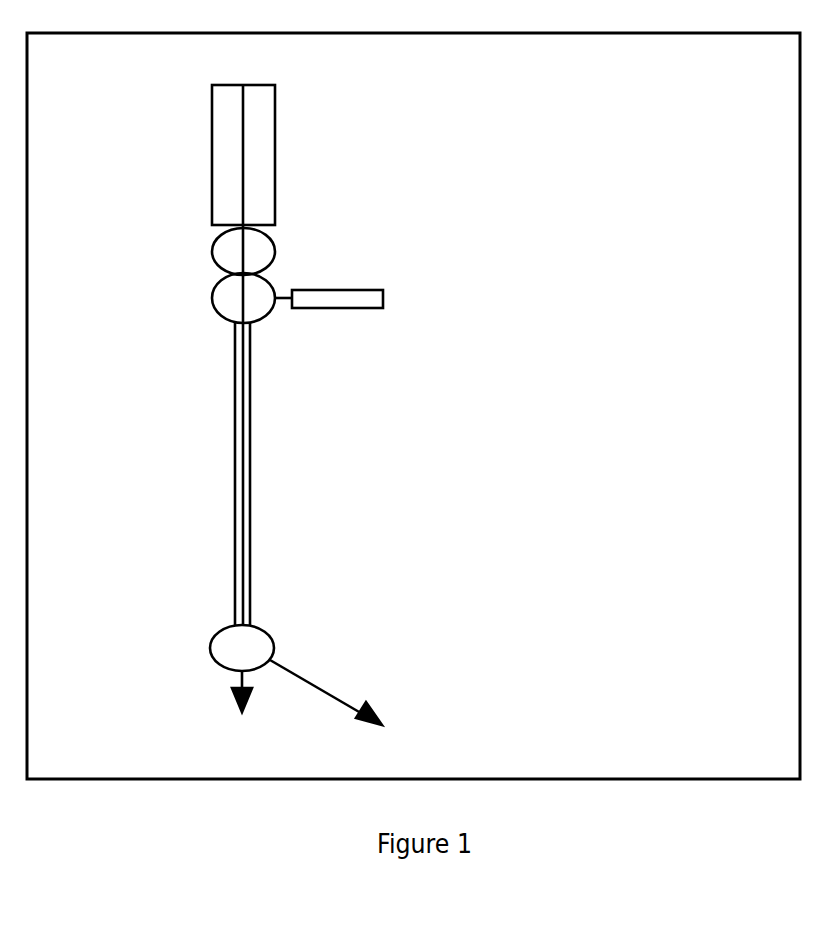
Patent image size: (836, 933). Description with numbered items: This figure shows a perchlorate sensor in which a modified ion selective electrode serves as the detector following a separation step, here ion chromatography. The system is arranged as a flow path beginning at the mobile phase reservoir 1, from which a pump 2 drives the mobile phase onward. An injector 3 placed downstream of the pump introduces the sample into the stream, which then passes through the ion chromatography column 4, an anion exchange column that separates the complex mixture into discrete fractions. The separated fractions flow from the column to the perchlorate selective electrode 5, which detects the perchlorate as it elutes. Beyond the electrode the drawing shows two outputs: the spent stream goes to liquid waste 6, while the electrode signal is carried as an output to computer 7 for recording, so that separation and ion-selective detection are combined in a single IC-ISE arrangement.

The mobile phase reservoir 1 is at (275, 160).
The pump 2 is at (275, 249).
The injector 3 is at (383, 298).
The ion chromatography column 4 is at (250, 392).
The perchlorate selective electrode 5 is at (265, 632).
The Liquid waste 6 is at (241, 712).
The Output to computer 7 is at (457, 703).